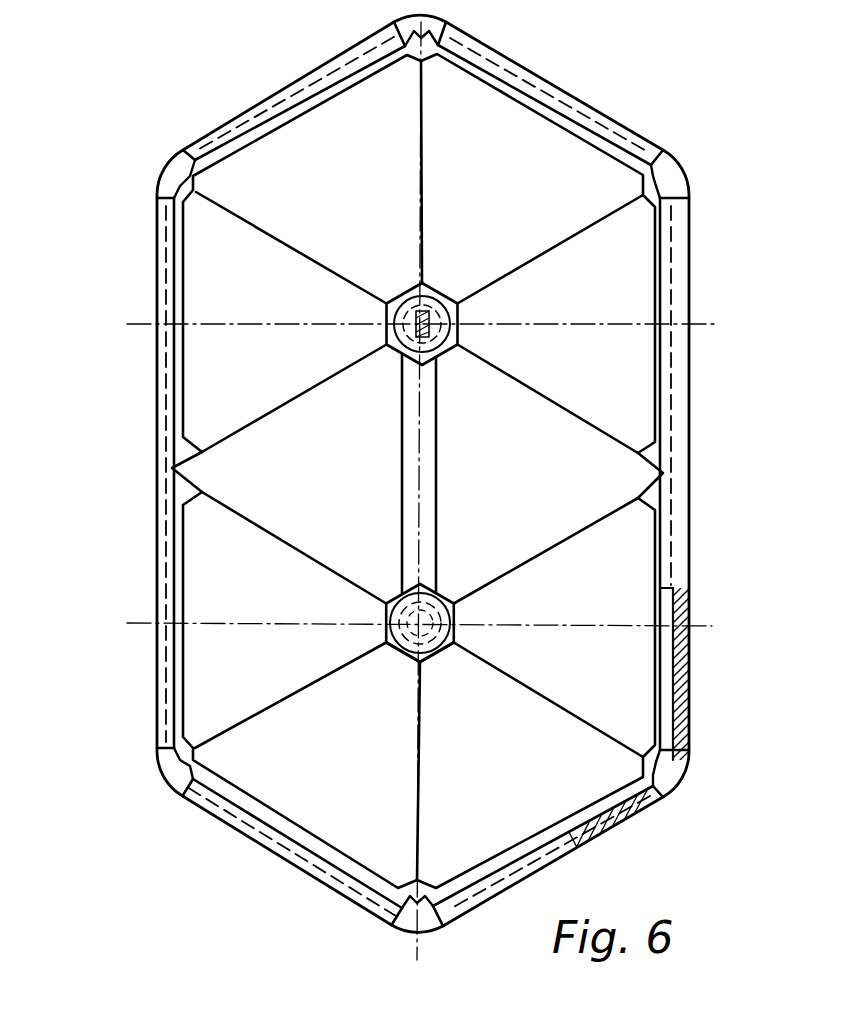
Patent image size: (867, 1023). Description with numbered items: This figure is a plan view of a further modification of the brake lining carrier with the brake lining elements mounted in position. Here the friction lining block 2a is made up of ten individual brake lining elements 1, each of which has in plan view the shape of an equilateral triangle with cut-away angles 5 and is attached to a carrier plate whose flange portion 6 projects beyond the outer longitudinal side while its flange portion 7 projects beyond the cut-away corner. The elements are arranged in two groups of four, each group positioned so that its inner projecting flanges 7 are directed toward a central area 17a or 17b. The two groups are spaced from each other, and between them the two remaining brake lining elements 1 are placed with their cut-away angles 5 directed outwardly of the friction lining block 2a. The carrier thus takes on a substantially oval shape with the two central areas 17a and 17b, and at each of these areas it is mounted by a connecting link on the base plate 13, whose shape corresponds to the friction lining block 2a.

The brake lining element 1 is at (277, 193).
The friction lining block 2a is at (700, 245).
The cut-away angle 5 is at (661, 469).
The flange portion 6 is at (668, 185).
The flange portion 7 is at (398, 358).
The base plate 13 is at (688, 712).
The central area 17a is at (431, 311).
The central area 17b is at (441, 600).